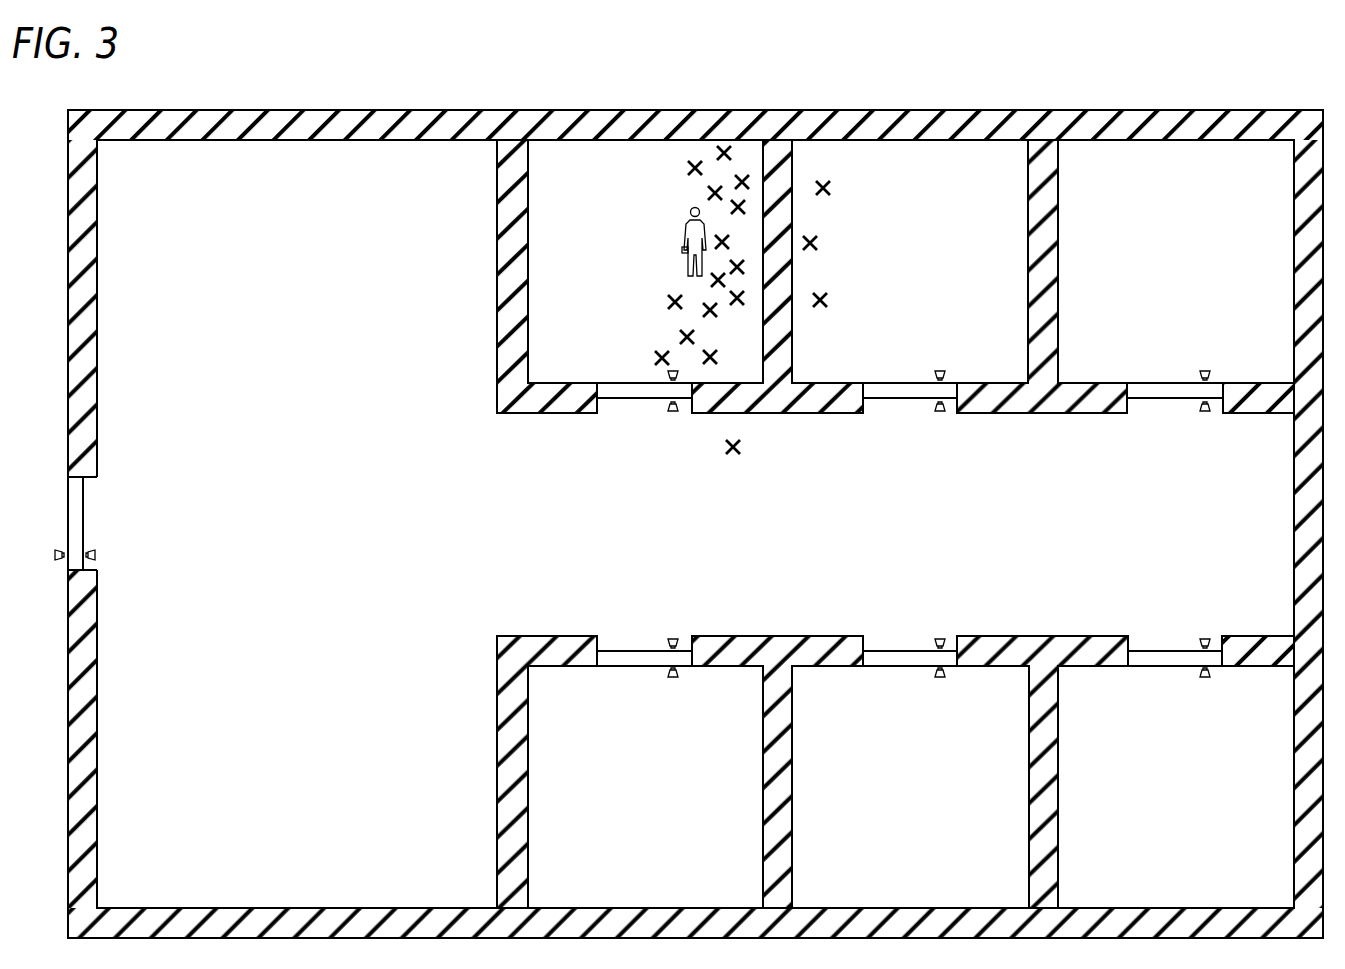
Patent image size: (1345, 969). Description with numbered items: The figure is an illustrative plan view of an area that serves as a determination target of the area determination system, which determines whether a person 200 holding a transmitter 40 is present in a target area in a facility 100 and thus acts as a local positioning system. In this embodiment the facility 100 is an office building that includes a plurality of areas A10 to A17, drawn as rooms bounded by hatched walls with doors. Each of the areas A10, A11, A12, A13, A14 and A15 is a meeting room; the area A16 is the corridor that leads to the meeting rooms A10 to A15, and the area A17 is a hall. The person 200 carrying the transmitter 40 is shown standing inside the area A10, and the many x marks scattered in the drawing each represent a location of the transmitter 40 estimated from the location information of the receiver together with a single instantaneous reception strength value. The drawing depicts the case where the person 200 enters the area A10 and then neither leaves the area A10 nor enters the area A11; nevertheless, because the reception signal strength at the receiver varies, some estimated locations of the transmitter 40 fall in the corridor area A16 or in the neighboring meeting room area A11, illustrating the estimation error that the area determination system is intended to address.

The facility 100 is at (170, 108).
The person 200 is at (690, 208).
The transmitter 40 is at (682, 252).
The area A10 is at (650, 349).
The area A11 is at (915, 349).
The area A12 is at (1182, 349).
The area A13 is at (650, 731).
The area A14 is at (915, 731).
The area A15 is at (1182, 731).
The area A16 is at (917, 541).
The area A17 is at (320, 541).